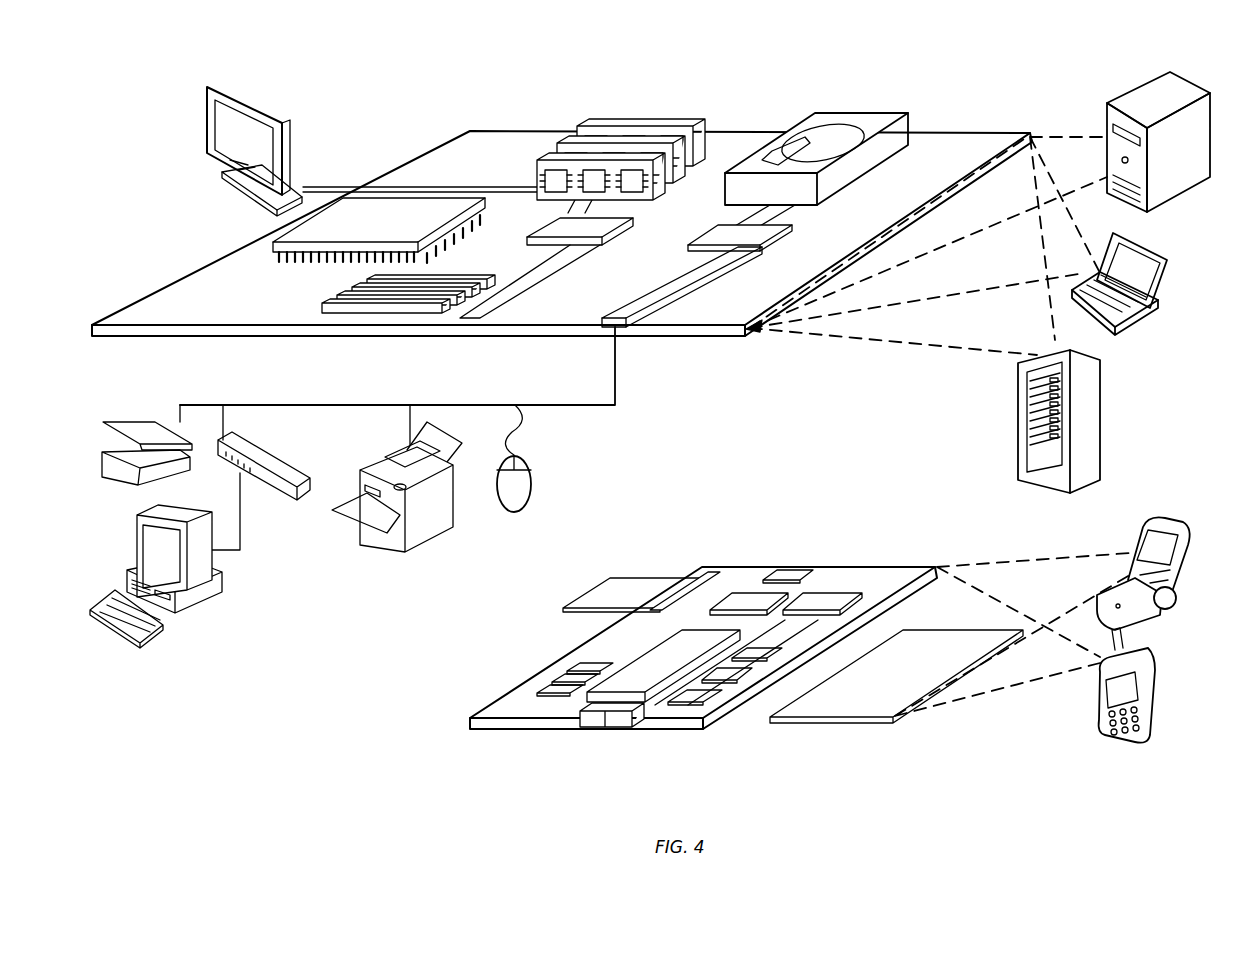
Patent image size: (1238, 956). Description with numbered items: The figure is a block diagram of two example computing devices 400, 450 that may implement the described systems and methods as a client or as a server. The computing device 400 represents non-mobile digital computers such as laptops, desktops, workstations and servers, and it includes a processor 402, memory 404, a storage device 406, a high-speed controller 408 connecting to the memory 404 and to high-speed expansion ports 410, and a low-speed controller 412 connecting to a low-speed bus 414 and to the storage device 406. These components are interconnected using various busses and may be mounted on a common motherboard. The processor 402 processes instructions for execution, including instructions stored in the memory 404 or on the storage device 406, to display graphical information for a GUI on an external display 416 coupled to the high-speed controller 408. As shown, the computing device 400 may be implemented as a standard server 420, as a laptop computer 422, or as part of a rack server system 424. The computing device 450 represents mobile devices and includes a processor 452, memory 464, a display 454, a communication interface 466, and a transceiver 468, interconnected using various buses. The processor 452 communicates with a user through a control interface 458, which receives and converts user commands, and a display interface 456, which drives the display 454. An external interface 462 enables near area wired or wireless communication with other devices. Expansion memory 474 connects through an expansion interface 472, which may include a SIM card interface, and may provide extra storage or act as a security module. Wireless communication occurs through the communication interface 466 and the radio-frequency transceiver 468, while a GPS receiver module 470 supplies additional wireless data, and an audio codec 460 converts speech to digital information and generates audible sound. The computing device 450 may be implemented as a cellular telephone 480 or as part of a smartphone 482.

The computing device 400 is at (116, 94).
The processor 402 is at (272, 243).
The memory 404 is at (590, 121).
The storage device 406 is at (807, 118).
The high-speed controller 408 is at (558, 231).
The high-speed expansion ports 410 is at (335, 301).
The low-speed controller 412 is at (722, 232).
The low-speed bus 414 is at (623, 328).
The display 416 is at (208, 85).
The standard server 420 is at (1108, 118).
The laptop computer 422 is at (1170, 262).
The rack server system 424 is at (1020, 443).
The computing device 450 is at (440, 732).
The processor 452 is at (637, 687).
The display 454 is at (857, 703).
The display interface 456 is at (702, 695).
The control interface 458 is at (732, 673).
The audio codec 460 is at (755, 653).
The external interface 462 is at (603, 712).
The memory 464 is at (552, 685).
The communication interface 466 is at (748, 600).
The transceiver 468 is at (823, 600).
The GPS receiver module 470 is at (795, 566).
The expansion interface 472 is at (675, 578).
The expansion memory 474 is at (610, 578).
The cellular telephone 480 is at (1143, 528).
The smartphone 482 is at (1098, 700).